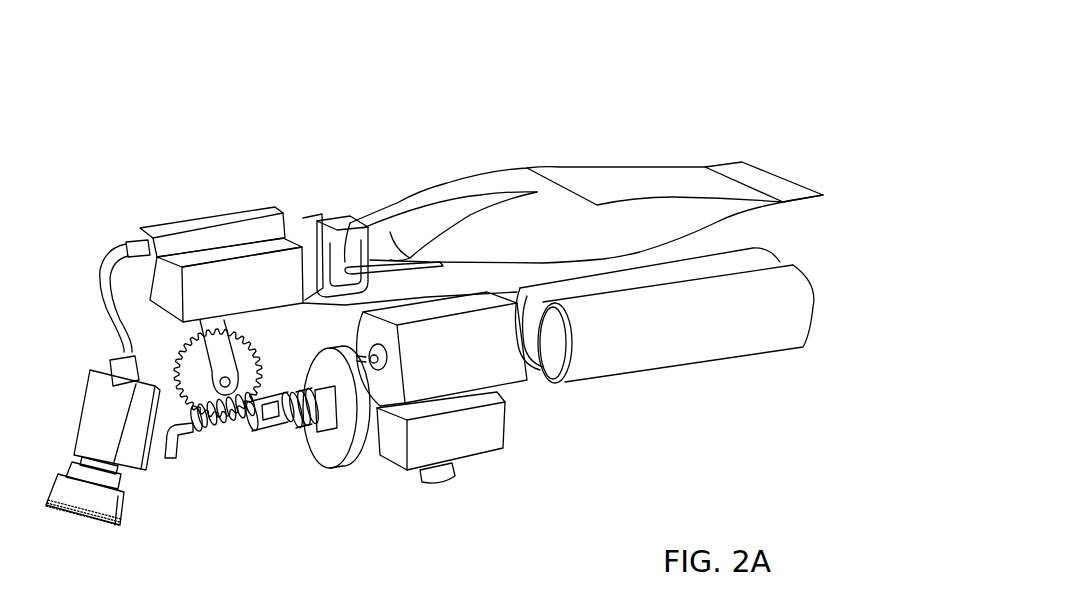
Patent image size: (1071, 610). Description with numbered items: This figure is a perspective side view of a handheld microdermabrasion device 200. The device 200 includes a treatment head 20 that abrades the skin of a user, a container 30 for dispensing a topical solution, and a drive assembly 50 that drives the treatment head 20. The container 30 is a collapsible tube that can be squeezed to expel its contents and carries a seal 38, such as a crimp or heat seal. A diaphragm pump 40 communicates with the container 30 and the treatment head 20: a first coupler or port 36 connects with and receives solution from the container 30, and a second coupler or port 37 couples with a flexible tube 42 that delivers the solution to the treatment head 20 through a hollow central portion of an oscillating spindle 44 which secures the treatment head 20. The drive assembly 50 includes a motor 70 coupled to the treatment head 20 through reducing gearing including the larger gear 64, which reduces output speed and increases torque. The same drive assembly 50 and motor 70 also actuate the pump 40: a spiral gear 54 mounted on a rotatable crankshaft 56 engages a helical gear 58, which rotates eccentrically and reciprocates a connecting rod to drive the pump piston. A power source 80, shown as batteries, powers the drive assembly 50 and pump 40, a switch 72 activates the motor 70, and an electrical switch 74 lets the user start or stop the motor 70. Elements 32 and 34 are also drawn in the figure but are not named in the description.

The handheld microdermabrasion device 200 is at (690, 90).
The container 30 is at (578, 168).
The seal 38 is at (728, 162).
The blade 32 is at (378, 228).
The first coupler or port 36 is at (298, 235).
The clamp 34 is at (330, 220).
The pump 40 is at (212, 218).
The second coupler or port 37 is at (140, 238).
The tube 42 is at (104, 278).
The spindle 44 is at (92, 392).
The treatment head 20 is at (118, 508).
The helical gear 58 is at (244, 352).
The spiral gear 54 is at (228, 440).
The crankshaft 56 is at (175, 458).
The drive assembly 50 is at (273, 435).
The gear 64 is at (352, 455).
The motor 70 is at (513, 378).
The electrical switch 74 is at (493, 449).
The switch 72 is at (453, 475).
The power source 80 is at (800, 268).